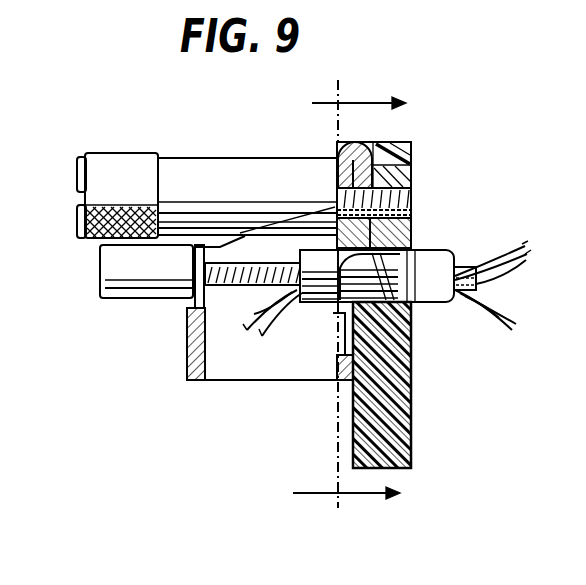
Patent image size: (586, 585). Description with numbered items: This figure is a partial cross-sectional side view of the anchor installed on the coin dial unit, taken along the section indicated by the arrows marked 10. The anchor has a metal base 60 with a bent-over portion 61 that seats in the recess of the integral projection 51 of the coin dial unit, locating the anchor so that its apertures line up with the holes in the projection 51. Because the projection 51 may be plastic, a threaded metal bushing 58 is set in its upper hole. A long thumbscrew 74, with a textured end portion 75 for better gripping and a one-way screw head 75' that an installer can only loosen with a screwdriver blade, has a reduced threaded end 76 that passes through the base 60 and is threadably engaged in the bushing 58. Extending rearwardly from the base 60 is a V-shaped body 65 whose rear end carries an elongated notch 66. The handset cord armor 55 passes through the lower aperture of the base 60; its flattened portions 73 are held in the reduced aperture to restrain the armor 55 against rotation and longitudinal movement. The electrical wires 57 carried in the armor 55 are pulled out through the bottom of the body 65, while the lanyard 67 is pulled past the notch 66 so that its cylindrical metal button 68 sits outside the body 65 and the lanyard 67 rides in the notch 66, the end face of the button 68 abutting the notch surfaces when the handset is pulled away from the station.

The section line 10- 10 is at (350, 305).
The projection 51 is at (402, 430).
The armor 55 is at (435, 259).
The electrical wires 57 is at (276, 313).
The threaded metal bushing 58 is at (413, 182).
The base 60 is at (333, 384).
The bent-over portion 61 is at (365, 150).
The V-shaped body 65 is at (194, 376).
The elongated notch 66 is at (187, 305).
The lanyard 67 is at (512, 256).
The cylindrical metal button 68 is at (122, 288).
The flattened portions 73 is at (412, 305).
The thumbscrew 74 is at (236, 184).
The textured end portion 75 is at (117, 179).
The one-way screw head 75' is at (49, 239).
The reduced threaded end 76 is at (413, 217).